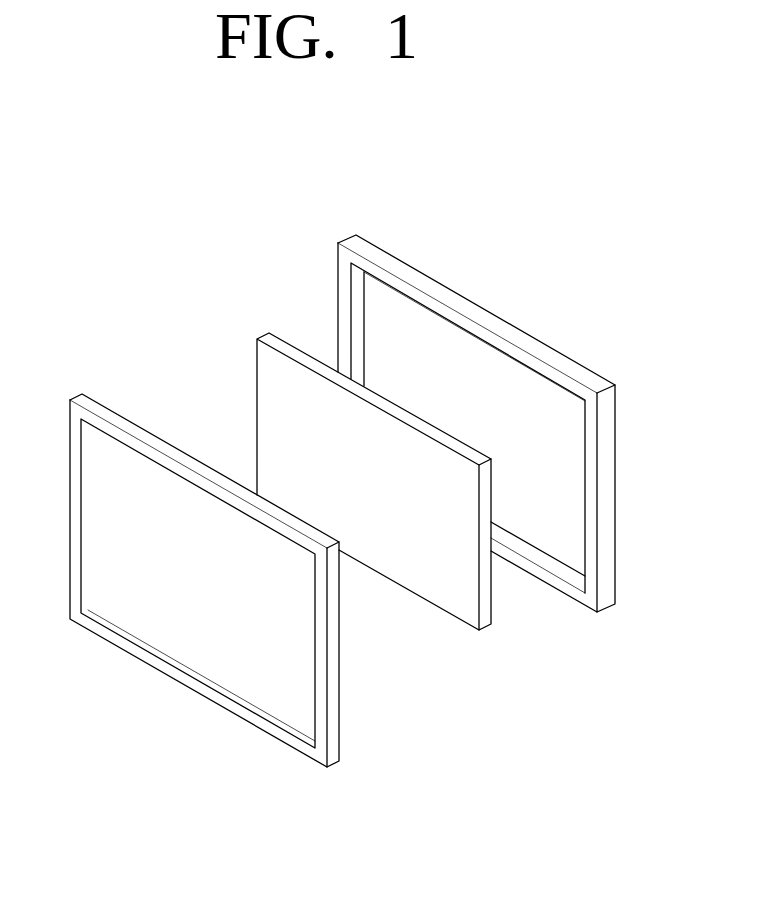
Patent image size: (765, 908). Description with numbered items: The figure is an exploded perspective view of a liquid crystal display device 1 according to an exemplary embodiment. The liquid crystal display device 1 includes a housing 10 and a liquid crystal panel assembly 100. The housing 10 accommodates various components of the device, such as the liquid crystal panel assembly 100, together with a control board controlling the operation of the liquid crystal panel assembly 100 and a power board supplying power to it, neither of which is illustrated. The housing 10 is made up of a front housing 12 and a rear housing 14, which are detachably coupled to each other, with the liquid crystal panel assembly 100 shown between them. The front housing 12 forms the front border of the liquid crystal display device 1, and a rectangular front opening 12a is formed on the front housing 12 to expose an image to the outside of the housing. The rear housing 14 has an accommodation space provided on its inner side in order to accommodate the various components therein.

The liquid crystal display device 1 is at (291, 167).
The housing 10 is at (342, 490).
The front housing 12 is at (90, 405).
The front opening 12a is at (259, 693).
The rear housing 14 is at (338, 249).
The liquid crystal panel assembly 100 is at (441, 652).